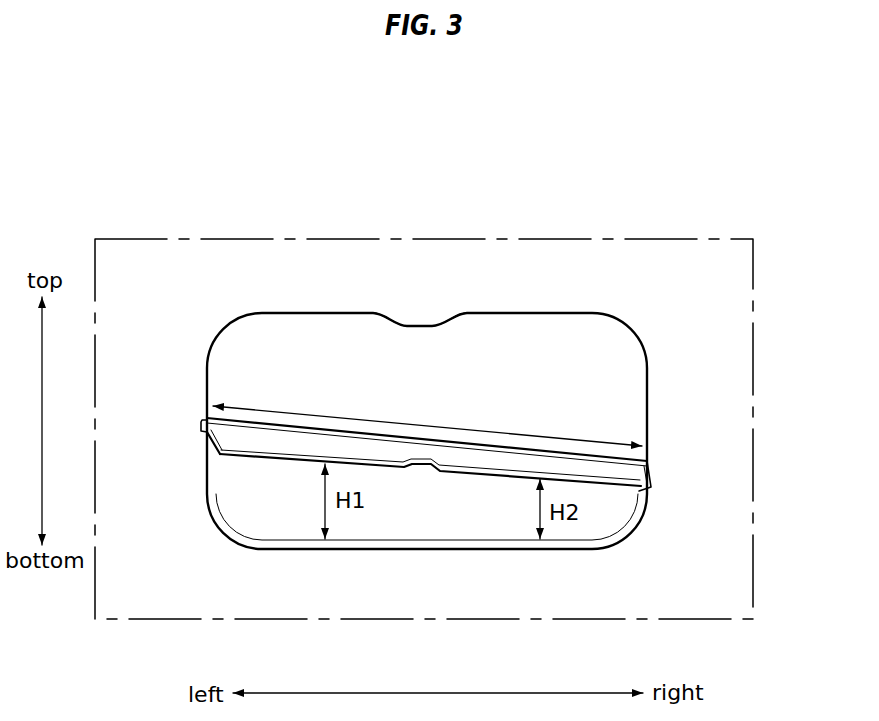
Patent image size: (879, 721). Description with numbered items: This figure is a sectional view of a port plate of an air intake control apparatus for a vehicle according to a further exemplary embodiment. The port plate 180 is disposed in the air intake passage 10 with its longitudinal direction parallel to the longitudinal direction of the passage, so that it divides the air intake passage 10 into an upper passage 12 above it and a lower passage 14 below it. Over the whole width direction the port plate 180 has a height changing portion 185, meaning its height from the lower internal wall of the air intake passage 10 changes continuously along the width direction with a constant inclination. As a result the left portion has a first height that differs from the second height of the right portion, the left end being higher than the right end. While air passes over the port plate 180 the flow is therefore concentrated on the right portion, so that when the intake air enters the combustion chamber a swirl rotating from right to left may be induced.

The air intake passage 10 is at (608, 313).
The upper passage 12 is at (479, 351).
The lower passage 14 is at (439, 506).
The port plate 180 is at (605, 453).
The height changing portion 185 is at (325, 428).